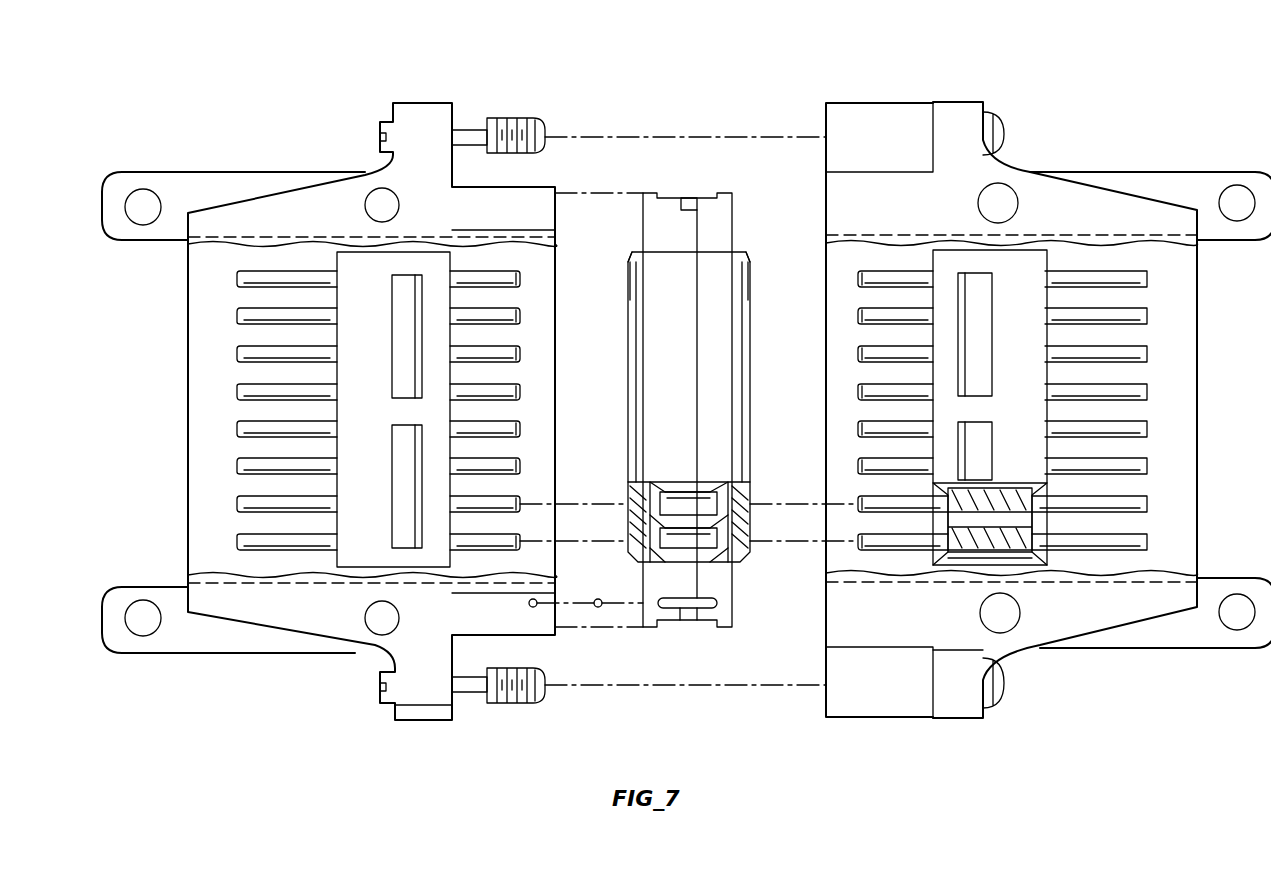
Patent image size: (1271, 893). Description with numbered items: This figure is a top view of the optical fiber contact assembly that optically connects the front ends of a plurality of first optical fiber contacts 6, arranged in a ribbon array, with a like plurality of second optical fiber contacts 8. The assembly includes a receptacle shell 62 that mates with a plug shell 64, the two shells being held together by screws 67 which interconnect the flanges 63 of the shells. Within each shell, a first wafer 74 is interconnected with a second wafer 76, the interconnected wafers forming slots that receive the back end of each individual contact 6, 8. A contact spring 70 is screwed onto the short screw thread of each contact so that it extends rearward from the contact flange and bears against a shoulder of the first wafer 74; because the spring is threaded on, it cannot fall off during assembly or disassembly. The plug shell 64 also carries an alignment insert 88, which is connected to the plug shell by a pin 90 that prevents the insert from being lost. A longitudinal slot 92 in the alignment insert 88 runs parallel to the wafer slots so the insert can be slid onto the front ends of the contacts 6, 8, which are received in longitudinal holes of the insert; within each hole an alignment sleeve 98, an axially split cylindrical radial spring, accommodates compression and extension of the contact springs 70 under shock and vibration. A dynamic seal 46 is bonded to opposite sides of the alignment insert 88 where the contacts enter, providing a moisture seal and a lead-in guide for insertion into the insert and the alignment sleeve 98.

The first optical fiber contact 6 is at (858, 390).
The second optical fiber contact 8 is at (523, 393).
The dynamic seal 46 is at (632, 264).
The receptacle shell 62 is at (1063, 170).
The flange 63 is at (410, 703).
The plug shell 64 is at (323, 170).
The screw 67 is at (518, 118).
The contact spring 70 is at (1005, 488).
The first wafer 74 is at (977, 562).
The second wafer 76 is at (945, 258).
The alignment insert 88 is at (689, 193).
The pin 90 is at (600, 608).
The longitudinal slot 92 is at (707, 608).
The alignment sleeve 98 is at (722, 567).